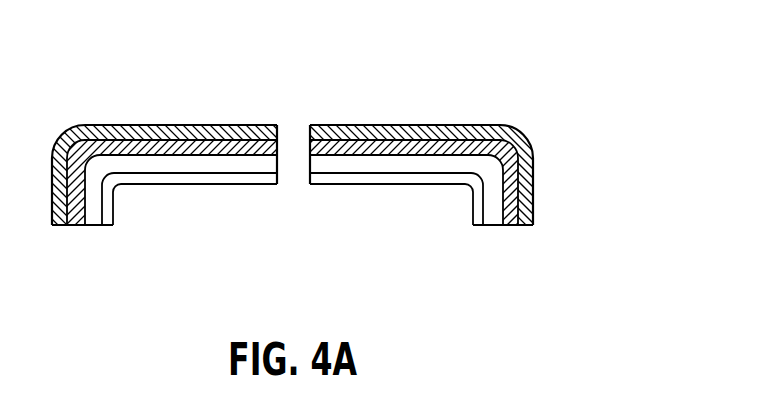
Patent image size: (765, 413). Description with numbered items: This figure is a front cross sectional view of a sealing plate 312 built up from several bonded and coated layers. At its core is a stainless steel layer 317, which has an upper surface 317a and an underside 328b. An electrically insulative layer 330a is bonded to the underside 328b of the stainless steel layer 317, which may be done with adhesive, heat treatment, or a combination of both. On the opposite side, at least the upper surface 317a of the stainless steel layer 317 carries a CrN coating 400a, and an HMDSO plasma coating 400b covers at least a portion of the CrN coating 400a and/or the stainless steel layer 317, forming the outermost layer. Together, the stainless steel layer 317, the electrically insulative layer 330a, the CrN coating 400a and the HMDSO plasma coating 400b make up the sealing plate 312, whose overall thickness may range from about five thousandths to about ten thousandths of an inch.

The sealing plate 312 is at (165, 64).
The HMDSO plasma coating 400b is at (429, 125).
The CrN coating 400a is at (512, 175).
The stainless steel layer 317 is at (492, 225).
The upper surface 317a is at (328, 155).
The underside 328b is at (423, 173).
The electrically insulative layer 330a is at (478, 225).